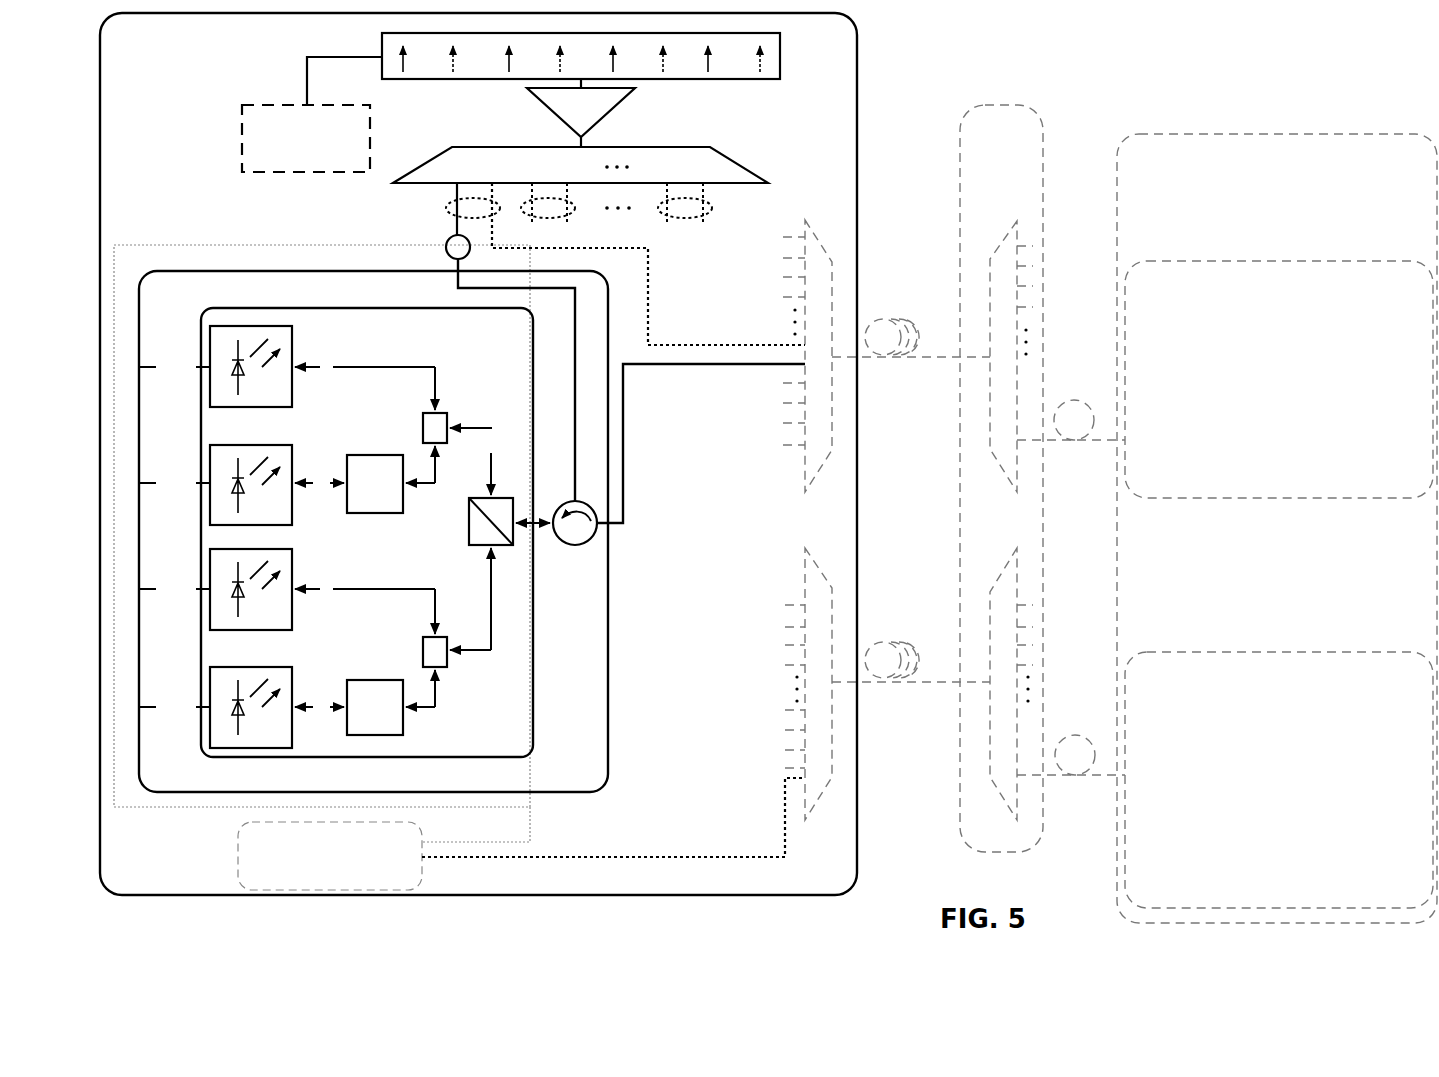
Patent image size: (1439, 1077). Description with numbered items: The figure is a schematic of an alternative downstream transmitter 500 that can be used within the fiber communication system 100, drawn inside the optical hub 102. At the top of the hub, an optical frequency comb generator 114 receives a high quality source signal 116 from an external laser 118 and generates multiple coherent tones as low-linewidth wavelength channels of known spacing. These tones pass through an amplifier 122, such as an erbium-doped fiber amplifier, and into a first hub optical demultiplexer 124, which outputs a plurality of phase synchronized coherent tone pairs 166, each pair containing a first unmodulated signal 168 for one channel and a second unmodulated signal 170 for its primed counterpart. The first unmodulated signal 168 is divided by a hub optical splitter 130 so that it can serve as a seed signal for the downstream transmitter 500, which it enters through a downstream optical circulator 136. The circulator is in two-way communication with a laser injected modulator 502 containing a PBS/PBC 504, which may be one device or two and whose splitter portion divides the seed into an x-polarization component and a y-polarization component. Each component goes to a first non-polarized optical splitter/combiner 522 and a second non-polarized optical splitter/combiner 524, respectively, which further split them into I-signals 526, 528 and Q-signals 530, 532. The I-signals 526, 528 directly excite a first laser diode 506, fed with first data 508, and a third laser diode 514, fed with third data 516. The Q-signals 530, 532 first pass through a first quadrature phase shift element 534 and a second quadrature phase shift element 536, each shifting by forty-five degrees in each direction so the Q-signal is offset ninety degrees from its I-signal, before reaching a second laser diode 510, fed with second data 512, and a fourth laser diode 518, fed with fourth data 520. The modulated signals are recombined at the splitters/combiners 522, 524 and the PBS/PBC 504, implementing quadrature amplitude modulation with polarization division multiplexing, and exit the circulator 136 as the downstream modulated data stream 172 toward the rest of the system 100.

The fiber communication system 100 is at (1348, 72).
The optical hub 102 is at (478, 454).
The optical frequency comb generator 114 is at (692, 79).
The high quality source signal 116 is at (305, 78).
The external laser 118 is at (306, 138).
The amplifier 122 is at (581, 113).
The first hub optical demultiplexer 124 is at (737, 162).
The hub optical splitter 130 is at (446, 247).
The downstream optical circulator 136 is at (575, 547).
The phase synchronized coherent tone pairs 166 is at (436, 210).
The first unmodulated signal 168 is at (573, 420).
The second unmodulated signal 170 is at (725, 345).
The downstream modulated data stream 172 is at (700, 366).
The downstream transmitter 500 is at (373, 531).
The laser injected modulator 502 is at (533, 675).
The PBS/PBC 504 is at (510, 497).
The first laser diode 506 is at (294, 336).
The first data 508 is at (172, 358).
The second laser diode 510 is at (293, 450).
The second data 512 is at (172, 475).
The third laser diode 514 is at (294, 559).
The third data 516 is at (172, 582).
The fourth laser diode 518 is at (294, 677).
The fourth data 520 is at (172, 700).
The first non-polarized optical splitter/combiner 522 is at (448, 412).
The second non-polarized optical splitter/combiner 524 is at (422, 655).
The I-signal 526 is at (364, 367).
The I-signal 528 is at (378, 590).
The Q-signal 530 is at (435, 490).
The Q-signal 532 is at (437, 695).
The first quadrature phase shift element 534 is at (368, 455).
The second quadrature phase shift element 536 is at (404, 729).